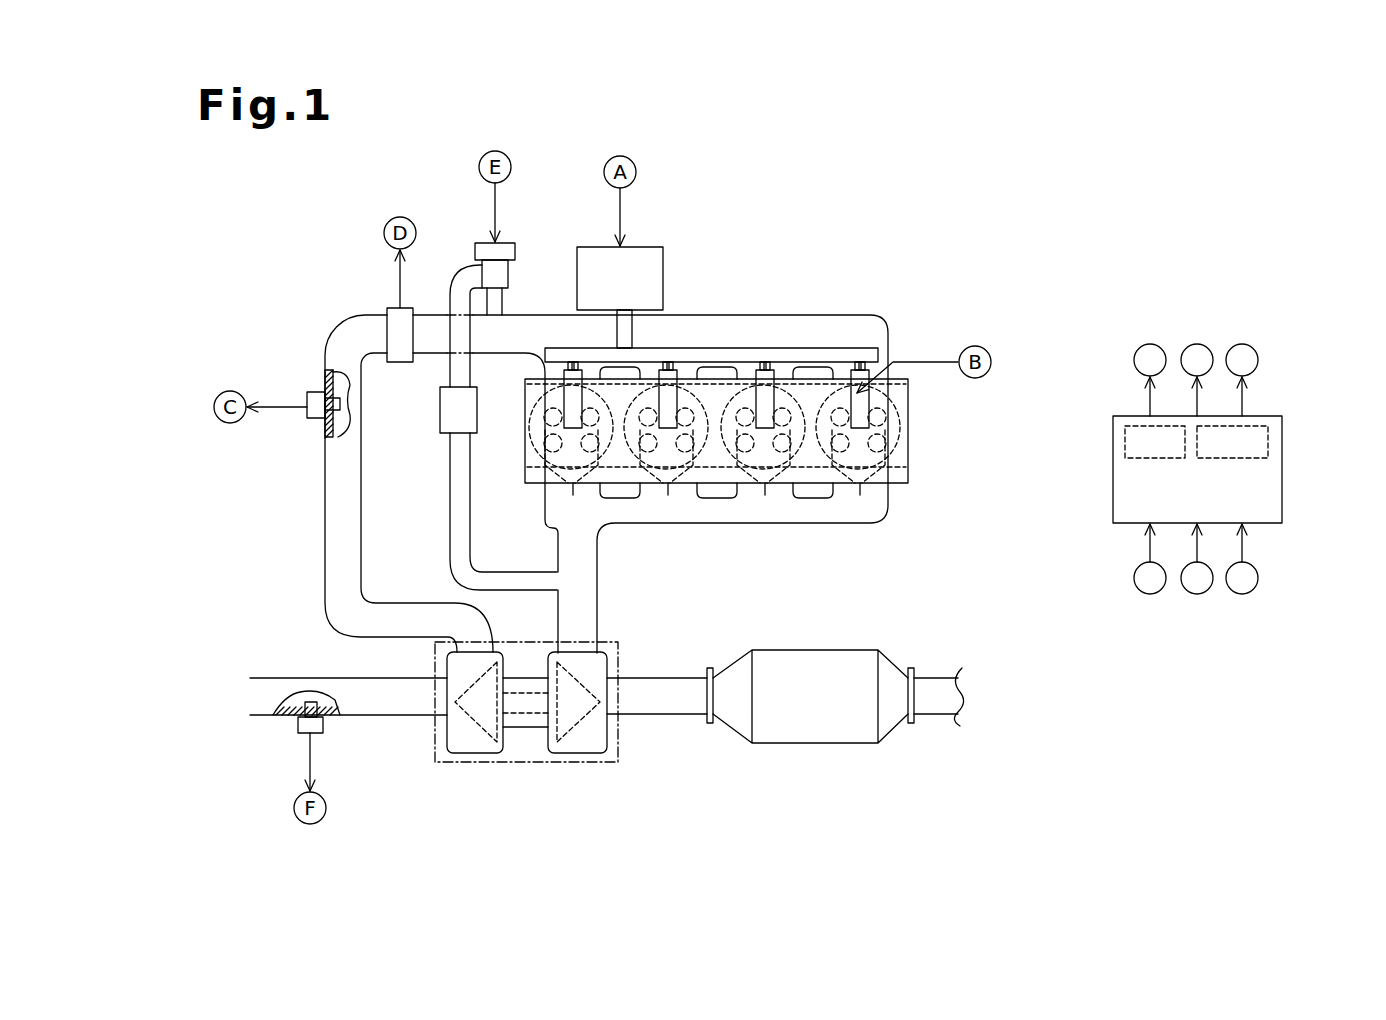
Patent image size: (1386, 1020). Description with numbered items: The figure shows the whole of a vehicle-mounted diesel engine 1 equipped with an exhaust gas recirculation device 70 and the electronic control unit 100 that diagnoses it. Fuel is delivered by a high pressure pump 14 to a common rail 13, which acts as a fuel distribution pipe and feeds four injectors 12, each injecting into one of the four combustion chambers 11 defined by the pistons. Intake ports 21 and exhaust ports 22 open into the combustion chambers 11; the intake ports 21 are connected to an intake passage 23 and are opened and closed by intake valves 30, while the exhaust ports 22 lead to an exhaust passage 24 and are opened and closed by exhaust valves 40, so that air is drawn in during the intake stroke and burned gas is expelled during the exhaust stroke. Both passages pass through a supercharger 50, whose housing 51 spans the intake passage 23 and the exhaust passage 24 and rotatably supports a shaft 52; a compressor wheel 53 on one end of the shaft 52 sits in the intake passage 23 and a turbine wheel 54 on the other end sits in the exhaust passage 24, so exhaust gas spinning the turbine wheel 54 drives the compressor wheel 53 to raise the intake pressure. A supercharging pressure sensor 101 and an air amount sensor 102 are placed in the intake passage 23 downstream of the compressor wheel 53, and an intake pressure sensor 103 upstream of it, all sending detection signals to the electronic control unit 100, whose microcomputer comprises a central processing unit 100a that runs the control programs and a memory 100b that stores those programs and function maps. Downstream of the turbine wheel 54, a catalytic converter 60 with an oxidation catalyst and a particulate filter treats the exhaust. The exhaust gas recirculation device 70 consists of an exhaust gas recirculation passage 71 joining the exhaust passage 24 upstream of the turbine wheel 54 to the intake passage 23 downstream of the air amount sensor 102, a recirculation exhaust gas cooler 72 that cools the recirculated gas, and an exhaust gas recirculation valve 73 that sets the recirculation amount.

The diesel engine 1 is at (920, 222).
The combustion chambers 11 is at (540, 438).
The injectors 12 is at (717, 375).
The common rail 13 is at (724, 348).
The high pressure pump 14 is at (640, 247).
The intake ports 21 is at (525, 394).
The exhaust ports 22 is at (525, 471).
The intake passage 23 is at (698, 320).
The exhaust passage 24 is at (705, 523).
The intake valves 30 is at (527, 415).
The exhaust valves 40 is at (717, 445).
The supercharger 50 is at (435, 660).
The housing 51 is at (527, 727).
The shaft 52 is at (527, 693).
The compressor wheel 53 is at (470, 745).
The turbine wheel 54 is at (580, 745).
The catalytic converter 60 is at (790, 650).
The exhaust gas recirculation device 70 is at (463, 243).
The exhaust gas recirculation passage 71 is at (450, 478).
The recirculation exhaust gas cooler 72 is at (440, 410).
The exhaust gas recirculation valve 73 is at (510, 275).
The electronic control unit 100 is at (1282, 492).
The central processing unit 100a is at (1125, 441).
The memory 100b is at (1268, 441).
The supercharging pressure sensor 101 is at (318, 419).
The air amount sensor 102 is at (392, 308).
The intake pressure sensor 103 is at (323, 727).